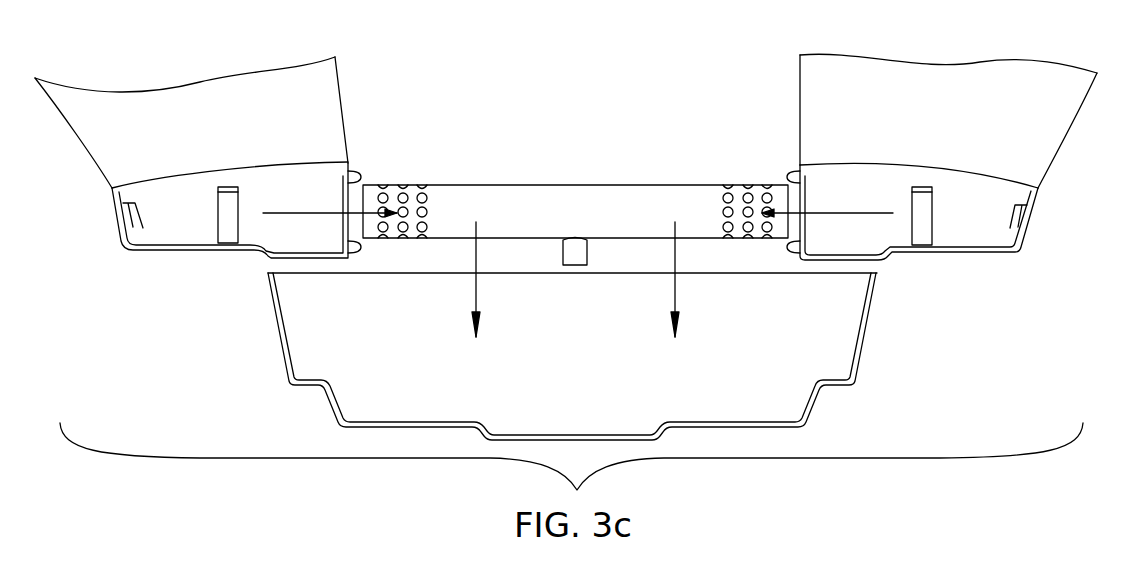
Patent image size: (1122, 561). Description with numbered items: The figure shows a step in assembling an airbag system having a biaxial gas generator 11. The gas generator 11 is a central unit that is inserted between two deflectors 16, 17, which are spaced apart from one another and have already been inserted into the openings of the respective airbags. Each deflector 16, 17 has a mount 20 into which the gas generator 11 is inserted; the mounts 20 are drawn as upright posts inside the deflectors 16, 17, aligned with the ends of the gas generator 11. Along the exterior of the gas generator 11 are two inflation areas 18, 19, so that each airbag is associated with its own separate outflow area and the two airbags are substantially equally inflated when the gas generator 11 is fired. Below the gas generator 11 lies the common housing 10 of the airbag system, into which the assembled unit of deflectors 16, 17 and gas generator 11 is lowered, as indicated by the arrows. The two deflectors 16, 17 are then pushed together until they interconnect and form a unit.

The housing 10 is at (867, 335).
The gas generator 11 is at (650, 208).
The deflector 16 is at (273, 257).
The deflector 17 is at (922, 253).
The inflation area 18 is at (403, 186).
The inflation area 19 is at (745, 185).
The mount 20 is at (227, 213).